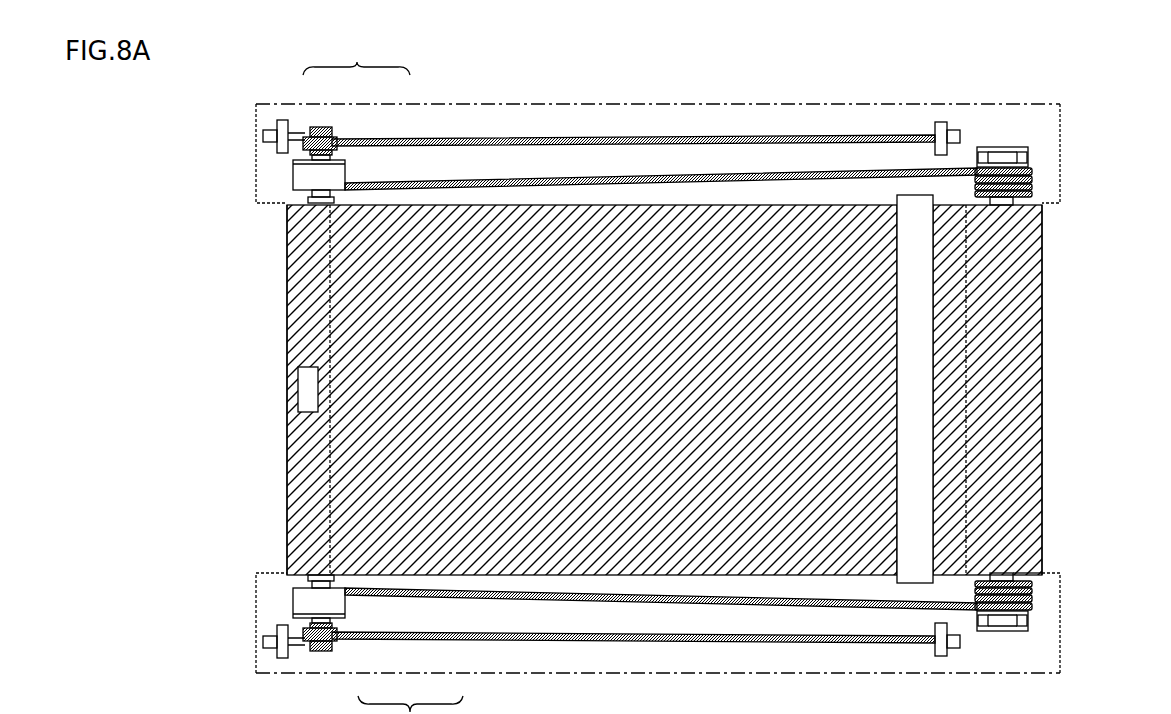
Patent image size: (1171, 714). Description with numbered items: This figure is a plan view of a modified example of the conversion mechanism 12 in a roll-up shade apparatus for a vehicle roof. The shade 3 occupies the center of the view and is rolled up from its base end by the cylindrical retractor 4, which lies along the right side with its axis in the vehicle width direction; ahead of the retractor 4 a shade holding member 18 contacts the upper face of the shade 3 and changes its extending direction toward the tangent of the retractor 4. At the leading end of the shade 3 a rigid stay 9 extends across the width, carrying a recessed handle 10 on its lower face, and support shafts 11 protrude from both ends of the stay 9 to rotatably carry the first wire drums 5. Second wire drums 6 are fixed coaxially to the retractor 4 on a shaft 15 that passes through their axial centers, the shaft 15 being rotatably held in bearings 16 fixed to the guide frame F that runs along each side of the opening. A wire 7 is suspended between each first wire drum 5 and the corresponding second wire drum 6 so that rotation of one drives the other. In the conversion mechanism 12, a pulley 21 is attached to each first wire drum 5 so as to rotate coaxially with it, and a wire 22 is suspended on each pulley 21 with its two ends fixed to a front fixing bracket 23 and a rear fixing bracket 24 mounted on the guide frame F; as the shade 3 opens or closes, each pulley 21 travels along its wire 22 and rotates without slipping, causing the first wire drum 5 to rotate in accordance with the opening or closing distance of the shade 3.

The shade 3 is at (625, 215).
The retractor 4 is at (1043, 318).
The first wire drum 5 is at (293, 172).
The second wire drum 6 is at (1030, 170).
The wire 7 is at (707, 177).
The stay 9 is at (287, 352).
The handle 10 is at (298, 390).
The support shaft 11 is at (305, 198).
The conversion mechanism 12 is at (383, 373).
The shaft 15 is at (1030, 573).
The bearing 16 is at (1005, 155).
The shade holding member 18 is at (918, 195).
The pulley 21 is at (318, 127).
The wire 22 is at (388, 138).
The front fixing bracket 23 is at (285, 120).
The rear fixing bracket 24 is at (948, 122).
The guide frame F is at (515, 104).